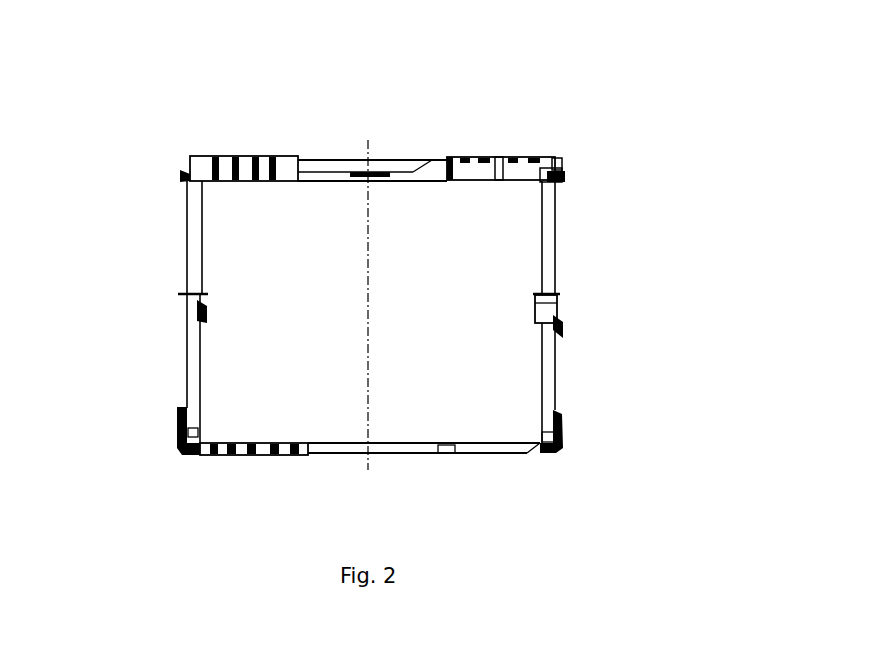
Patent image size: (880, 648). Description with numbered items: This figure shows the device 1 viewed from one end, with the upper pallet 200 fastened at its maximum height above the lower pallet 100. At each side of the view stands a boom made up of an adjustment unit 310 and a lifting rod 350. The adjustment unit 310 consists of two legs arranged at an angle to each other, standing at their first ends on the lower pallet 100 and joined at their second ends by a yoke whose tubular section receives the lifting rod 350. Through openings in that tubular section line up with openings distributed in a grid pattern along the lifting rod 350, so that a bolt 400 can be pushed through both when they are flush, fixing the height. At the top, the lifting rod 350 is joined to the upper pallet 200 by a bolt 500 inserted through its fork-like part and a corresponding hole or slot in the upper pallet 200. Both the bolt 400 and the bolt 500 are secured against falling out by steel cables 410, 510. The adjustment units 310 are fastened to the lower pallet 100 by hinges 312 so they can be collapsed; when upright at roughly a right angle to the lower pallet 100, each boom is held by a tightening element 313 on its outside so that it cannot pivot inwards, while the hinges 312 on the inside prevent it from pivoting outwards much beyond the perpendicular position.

The device 1 is at (353, 143).
The lower pallet 100 is at (520, 453).
The upper pallet 200 is at (533, 157).
The adjustment unit 310 is at (548, 373).
The hinge 312 is at (207, 437).
The tightening element 313 is at (180, 437).
The lifting rod 350 is at (547, 220).
The bolt 400 is at (557, 322).
The steel cable 410 is at (183, 322).
The bolt 500 is at (563, 167).
The steel cable 510 is at (560, 162).